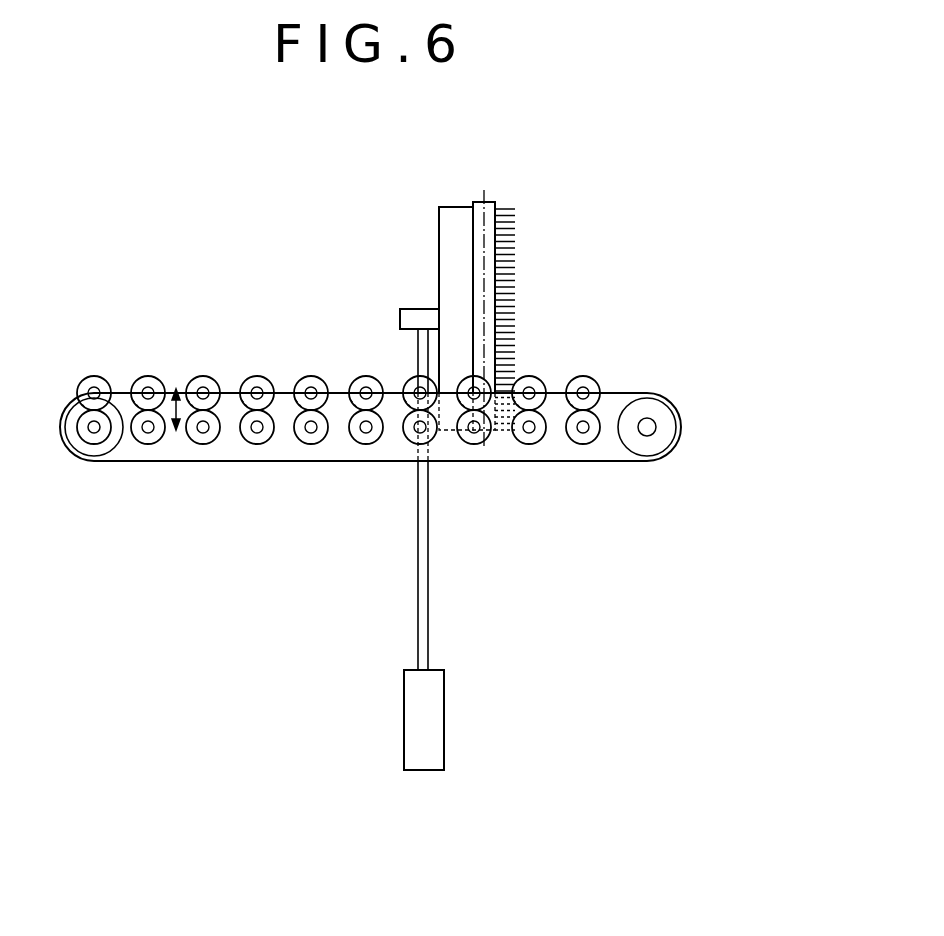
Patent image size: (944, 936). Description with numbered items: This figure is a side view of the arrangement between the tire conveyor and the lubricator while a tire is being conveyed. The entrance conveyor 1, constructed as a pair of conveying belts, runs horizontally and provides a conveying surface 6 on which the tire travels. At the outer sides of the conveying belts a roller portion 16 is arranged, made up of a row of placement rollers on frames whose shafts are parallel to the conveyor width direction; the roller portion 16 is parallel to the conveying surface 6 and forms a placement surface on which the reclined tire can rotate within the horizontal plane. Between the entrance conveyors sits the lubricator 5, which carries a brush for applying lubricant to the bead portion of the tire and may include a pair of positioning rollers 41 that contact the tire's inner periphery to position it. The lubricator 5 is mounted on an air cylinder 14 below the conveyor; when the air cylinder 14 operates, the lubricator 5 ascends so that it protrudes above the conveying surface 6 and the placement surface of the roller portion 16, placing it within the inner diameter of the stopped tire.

The entrance conveyor 1 is at (613, 452).
The conveying surface 6 is at (612, 392).
The roller portion 16 is at (348, 373).
The lubricator 5 is at (456, 218).
The positioning rollers 41 is at (487, 208).
The air cylinder 14 is at (426, 720).